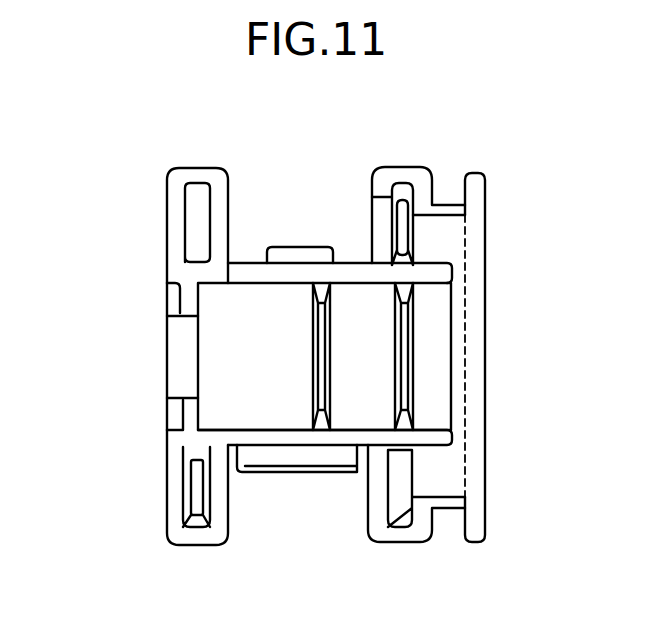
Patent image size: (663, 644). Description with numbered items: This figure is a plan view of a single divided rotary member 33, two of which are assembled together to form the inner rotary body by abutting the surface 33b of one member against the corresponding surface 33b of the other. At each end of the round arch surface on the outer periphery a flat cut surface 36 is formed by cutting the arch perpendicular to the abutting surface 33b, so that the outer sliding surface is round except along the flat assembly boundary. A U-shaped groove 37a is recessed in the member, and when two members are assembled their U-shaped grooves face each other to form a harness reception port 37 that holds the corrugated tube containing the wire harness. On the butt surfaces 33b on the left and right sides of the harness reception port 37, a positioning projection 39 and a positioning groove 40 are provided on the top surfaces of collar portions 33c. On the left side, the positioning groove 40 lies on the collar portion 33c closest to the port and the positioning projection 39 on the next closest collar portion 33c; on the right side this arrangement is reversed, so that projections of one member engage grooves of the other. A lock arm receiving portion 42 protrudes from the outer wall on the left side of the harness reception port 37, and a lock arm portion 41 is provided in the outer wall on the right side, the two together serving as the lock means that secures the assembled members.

The divided rotary member 33 is at (147, 288).
The abutting surface 33b is at (248, 278).
The collar portion 33c is at (373, 166).
The cut surface 36 is at (185, 168).
The harness reception port 37 is at (187, 324).
The U-shaped groove 37a is at (165, 330).
The positioning projection 39 is at (388, 166).
The positioning groove 40 is at (187, 192).
The lock arm portion 41 is at (305, 468).
The lock arm receiving portion 42 is at (305, 247).